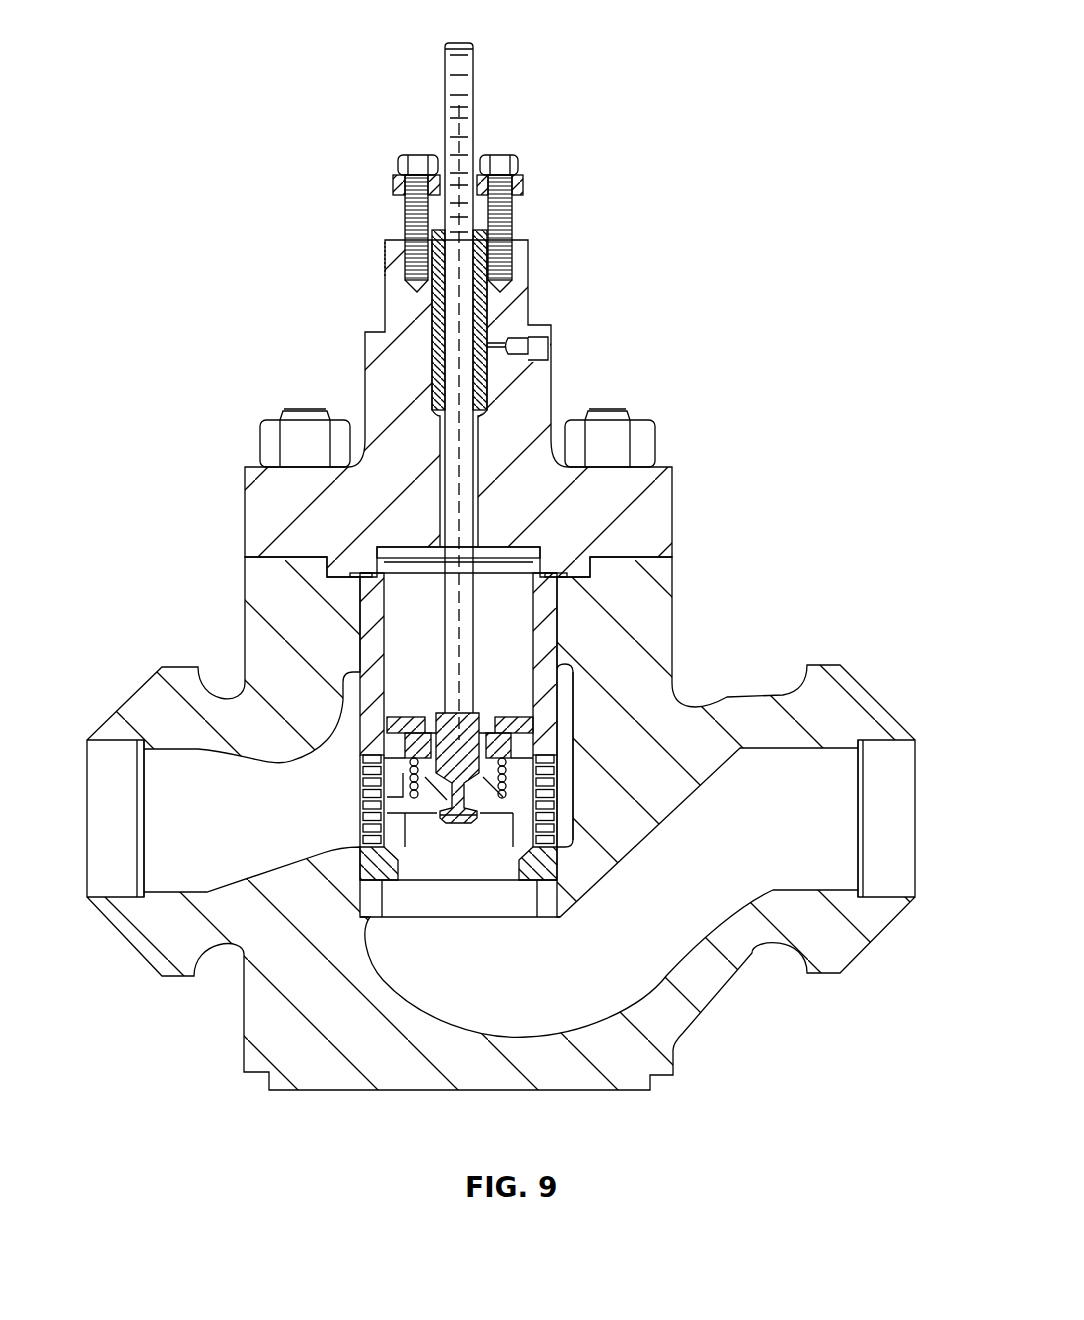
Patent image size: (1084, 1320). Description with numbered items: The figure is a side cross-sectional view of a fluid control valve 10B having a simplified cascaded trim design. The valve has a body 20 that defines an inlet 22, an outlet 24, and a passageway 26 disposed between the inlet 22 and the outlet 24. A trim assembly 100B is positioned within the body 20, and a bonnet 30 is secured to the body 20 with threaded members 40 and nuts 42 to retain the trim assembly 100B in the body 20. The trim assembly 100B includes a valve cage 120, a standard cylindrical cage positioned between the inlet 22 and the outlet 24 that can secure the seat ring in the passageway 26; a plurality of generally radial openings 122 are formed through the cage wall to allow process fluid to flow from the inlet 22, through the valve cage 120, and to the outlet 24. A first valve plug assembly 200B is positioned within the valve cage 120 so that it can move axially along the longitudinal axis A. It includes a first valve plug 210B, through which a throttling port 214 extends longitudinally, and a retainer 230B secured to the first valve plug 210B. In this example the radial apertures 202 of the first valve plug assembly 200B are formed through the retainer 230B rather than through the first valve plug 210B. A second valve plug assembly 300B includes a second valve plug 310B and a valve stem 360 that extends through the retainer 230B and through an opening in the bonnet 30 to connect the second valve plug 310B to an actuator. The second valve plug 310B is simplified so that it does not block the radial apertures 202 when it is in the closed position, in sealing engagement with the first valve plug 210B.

The fluid control valve 10B is at (183, 121).
The body 20 is at (265, 580).
The inlet 22 is at (103, 775).
The outlet 24 is at (897, 768).
The passageway 26 is at (470, 913).
The bonnet 30 is at (660, 480).
The threaded members 40 is at (303, 410).
The nuts 42 is at (270, 440).
The longitudinal axis A is at (433, 325).
The valve stem 360 is at (455, 487).
The valve cage 120 is at (558, 627).
The radial openings 122 is at (555, 830).
The trim assembly 100B is at (563, 710).
The first valve plug assembly 200B is at (496, 898).
The first valve plug 210B is at (485, 829).
The throttling port 214 is at (463, 822).
The second valve plug assembly 300B is at (449, 786).
The second valve plug 310B is at (440, 718).
The retainer 230B is at (400, 742).
The radial apertures 202 is at (399, 781).